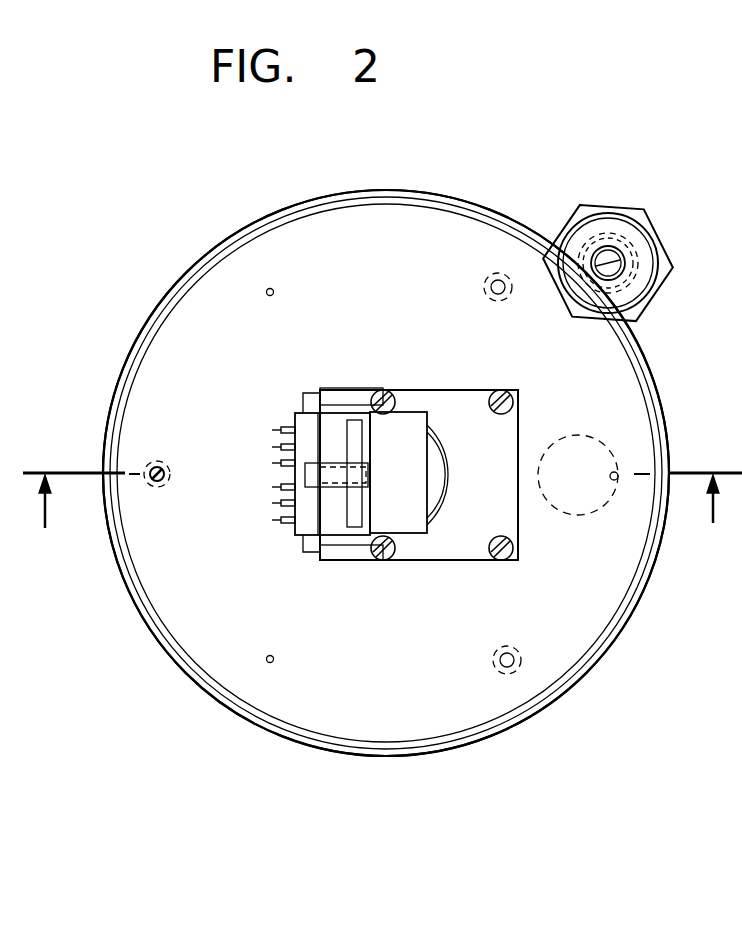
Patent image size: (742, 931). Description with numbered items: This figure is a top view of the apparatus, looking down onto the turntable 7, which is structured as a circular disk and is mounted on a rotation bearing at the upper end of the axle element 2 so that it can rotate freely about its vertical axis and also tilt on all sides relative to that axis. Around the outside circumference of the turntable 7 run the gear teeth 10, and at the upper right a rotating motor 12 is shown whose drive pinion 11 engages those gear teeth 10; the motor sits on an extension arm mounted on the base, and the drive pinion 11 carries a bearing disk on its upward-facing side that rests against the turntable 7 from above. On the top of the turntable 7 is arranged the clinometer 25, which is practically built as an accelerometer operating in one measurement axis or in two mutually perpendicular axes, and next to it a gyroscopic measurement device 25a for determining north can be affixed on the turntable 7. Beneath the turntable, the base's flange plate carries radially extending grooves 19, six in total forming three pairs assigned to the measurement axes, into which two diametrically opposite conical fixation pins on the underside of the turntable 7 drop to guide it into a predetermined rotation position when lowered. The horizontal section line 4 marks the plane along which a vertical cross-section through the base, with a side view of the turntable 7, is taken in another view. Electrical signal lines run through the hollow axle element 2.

The turntable 7 is at (162, 337).
The gear teeth 10 is at (657, 377).
The drive pinion 11 is at (633, 261).
The rotating motor 12 is at (617, 208).
The grooves 19 is at (741, 424).
The axle element 2 is at (737, 455).
The line 4— 4 is at (382, 526).
The clinometer 25 is at (300, 420).
The gyroscopic measurement device 25a is at (412, 418).